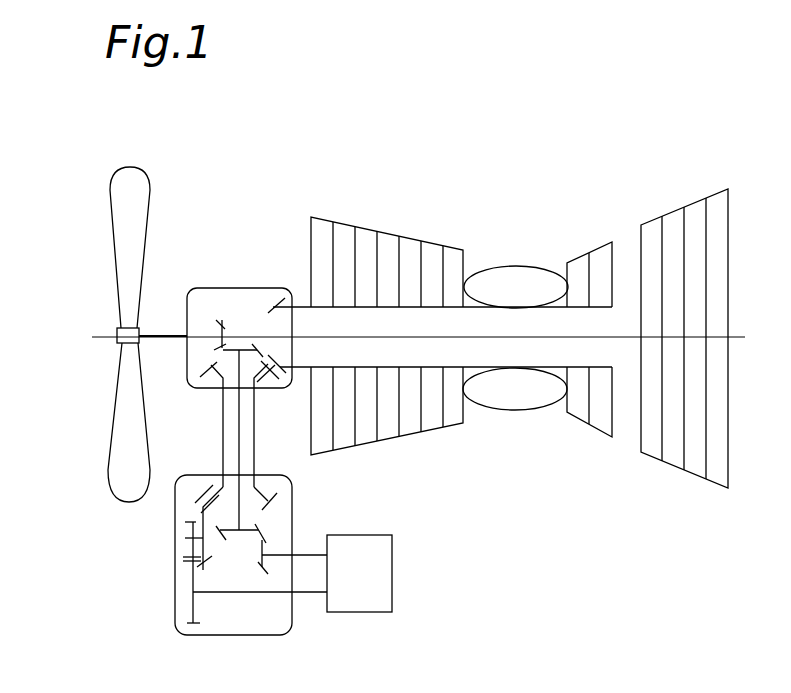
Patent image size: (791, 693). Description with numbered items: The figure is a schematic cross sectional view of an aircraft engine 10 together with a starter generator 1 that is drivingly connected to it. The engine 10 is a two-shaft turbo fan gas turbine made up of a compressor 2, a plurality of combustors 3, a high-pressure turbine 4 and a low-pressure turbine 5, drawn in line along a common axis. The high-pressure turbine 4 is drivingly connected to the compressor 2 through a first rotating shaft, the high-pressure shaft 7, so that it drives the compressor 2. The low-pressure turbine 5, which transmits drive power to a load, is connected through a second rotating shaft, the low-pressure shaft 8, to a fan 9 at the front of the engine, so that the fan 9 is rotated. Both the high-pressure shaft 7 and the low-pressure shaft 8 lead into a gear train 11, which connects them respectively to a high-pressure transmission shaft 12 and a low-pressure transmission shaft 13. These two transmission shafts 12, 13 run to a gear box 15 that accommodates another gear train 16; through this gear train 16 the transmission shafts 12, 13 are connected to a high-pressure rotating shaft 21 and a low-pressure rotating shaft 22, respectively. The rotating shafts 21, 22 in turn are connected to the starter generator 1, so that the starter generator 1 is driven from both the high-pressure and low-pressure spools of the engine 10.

The starter generator 1 is at (392, 580).
The compressor 2 is at (387, 314).
The combustors 3 is at (515, 300).
The high-pressure turbine 4 is at (599, 281).
The low-pressure turbine 5 is at (684, 316).
The high-pressure shaft 7 is at (387, 306).
The low-pressure shaft 8 is at (404, 341).
The fan 9 is at (159, 306).
The aircraft engine 10 is at (525, 176).
The gear train 11 is at (256, 248).
The high-pressure transmission shaft 12 is at (257, 427).
The low-pressure transmission shaft 13 is at (237, 430).
The gear box 15 is at (279, 552).
The gear train 16 is at (284, 525).
The high-pressure rotating shaft 21 is at (312, 593).
The low-pressure rotating shaft 22 is at (312, 555).